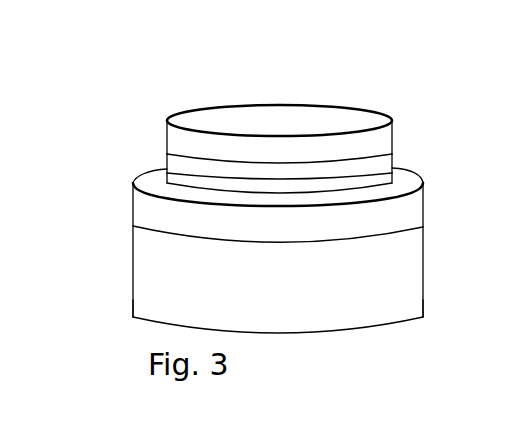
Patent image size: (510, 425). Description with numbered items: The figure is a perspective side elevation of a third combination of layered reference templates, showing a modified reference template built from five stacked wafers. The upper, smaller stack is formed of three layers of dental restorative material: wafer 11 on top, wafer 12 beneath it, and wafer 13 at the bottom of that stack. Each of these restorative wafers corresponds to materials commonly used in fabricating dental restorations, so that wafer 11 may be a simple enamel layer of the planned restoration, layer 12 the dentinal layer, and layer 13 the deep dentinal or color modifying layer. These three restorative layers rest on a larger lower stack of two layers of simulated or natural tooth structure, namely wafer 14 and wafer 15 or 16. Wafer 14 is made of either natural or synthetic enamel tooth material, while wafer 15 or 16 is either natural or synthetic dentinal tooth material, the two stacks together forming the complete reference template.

The wafer 11 is at (190, 142).
The wafer 12 is at (382, 162).
The wafer 13 is at (187, 177).
The wafer 14 is at (392, 209).
The wafer 15 is at (182, 274).
The wafer 16 is at (219, 298).